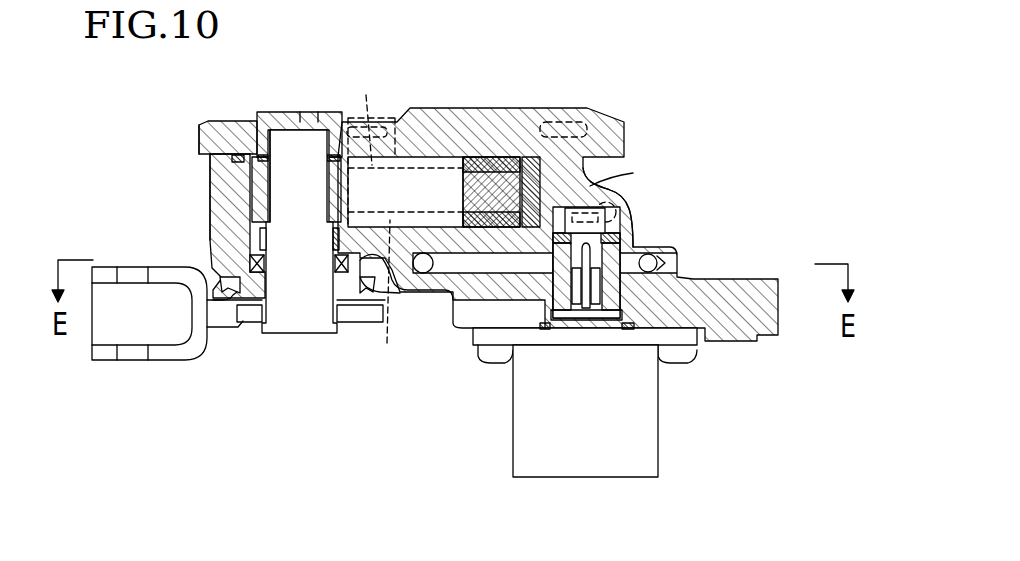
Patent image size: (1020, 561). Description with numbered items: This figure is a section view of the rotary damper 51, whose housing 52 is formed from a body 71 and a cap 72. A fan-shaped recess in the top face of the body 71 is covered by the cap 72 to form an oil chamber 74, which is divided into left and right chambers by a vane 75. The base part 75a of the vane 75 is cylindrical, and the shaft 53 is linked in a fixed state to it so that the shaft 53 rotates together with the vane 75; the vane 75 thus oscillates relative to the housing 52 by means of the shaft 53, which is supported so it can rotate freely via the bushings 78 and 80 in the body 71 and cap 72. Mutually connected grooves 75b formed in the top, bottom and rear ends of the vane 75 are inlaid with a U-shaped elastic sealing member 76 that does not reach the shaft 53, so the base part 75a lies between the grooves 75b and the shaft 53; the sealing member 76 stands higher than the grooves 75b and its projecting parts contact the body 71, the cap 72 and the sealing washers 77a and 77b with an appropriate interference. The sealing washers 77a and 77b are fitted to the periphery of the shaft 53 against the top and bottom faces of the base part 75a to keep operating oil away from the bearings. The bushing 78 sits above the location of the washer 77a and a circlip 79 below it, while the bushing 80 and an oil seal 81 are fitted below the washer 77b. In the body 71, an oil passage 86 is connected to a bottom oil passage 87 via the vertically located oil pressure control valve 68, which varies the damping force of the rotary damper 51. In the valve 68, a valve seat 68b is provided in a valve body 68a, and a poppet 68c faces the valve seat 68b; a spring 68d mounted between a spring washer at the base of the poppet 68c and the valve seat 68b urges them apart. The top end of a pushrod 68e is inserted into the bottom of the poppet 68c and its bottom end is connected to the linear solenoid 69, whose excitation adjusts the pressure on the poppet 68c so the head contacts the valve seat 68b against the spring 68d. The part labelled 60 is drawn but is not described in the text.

The rotary damper 51 is at (651, 97).
The housing 52 is at (140, 105).
The shaft 53 is at (305, 334).
The clevis 60 is at (168, 357).
The oil pressure control valve 68 is at (533, 297).
The valve body 68a is at (678, 348).
The valve seat 68b is at (620, 233).
The poppet 68c is at (572, 302).
The spring 68d is at (660, 259).
The pushrod 68e is at (592, 310).
The linear solenoid 69 is at (583, 462).
The body 71 is at (214, 173).
The cap 72 is at (205, 128).
The oil chamber 74 is at (497, 160).
The vane 75 is at (430, 185).
The base part 75a is at (240, 212).
The grooves 75b is at (511, 223).
The sealing member 76 is at (524, 175).
The sealing washer 77a is at (261, 113).
The sealing washer 77b is at (246, 232).
The bushing 78 is at (312, 114).
The circlip 79 is at (289, 176).
The bushing 80 is at (267, 239).
The oil seal 81 is at (266, 264).
The oil passage 86 is at (630, 202).
The oil passage 87 is at (477, 268).